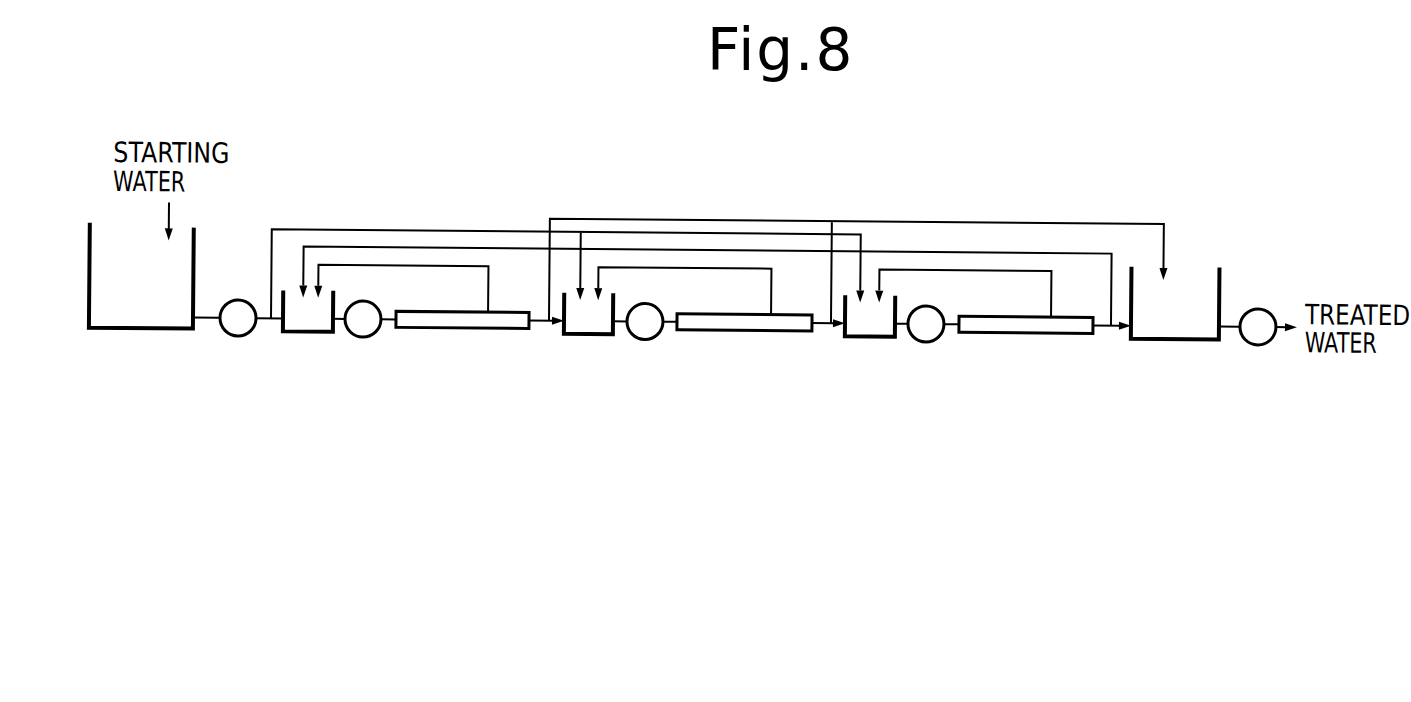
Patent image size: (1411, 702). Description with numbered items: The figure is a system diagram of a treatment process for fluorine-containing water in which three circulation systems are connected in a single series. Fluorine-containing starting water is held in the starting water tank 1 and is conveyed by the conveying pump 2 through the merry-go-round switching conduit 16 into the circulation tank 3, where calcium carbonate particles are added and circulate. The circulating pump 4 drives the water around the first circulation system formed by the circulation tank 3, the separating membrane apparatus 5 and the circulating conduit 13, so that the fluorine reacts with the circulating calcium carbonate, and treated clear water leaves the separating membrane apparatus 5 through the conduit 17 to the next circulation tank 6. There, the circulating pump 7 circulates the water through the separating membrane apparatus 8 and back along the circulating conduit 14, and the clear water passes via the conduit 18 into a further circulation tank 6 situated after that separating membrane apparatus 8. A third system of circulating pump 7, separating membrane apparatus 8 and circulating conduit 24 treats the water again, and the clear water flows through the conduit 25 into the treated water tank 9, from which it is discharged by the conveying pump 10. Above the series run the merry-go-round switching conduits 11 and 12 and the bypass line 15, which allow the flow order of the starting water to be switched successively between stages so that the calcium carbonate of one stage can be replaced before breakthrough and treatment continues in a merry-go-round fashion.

The starting water tank 1 is at (152, 331).
The conveying pump 2 is at (235, 337).
The circulation tank 3 is at (317, 332).
The circulating pump 4 is at (362, 338).
The separating membrane apparatus 5 is at (448, 327).
The circulation tank 6 is at (590, 334).
The circulating pump 7 is at (660, 336).
The separating membrane apparatus 8 is at (742, 327).
The treated water tank 9 is at (1173, 334).
The conveying pump 10 is at (1252, 334).
The merry-go-round switching conduit 11 is at (271, 243).
The merry-go-round switching conduit 12 is at (338, 245).
The circulating conduit 13 is at (437, 264).
The circulating conduit 14 is at (750, 263).
The bypass line 15 is at (615, 215).
The merry-go-round switching conduit 16 is at (272, 333).
The connecting pipe 17 is at (550, 324).
The merry-go-round switching conduit 18 is at (833, 323).
The circulating conduit 24 is at (1032, 263).
The connecting pipe 25 is at (1115, 321).